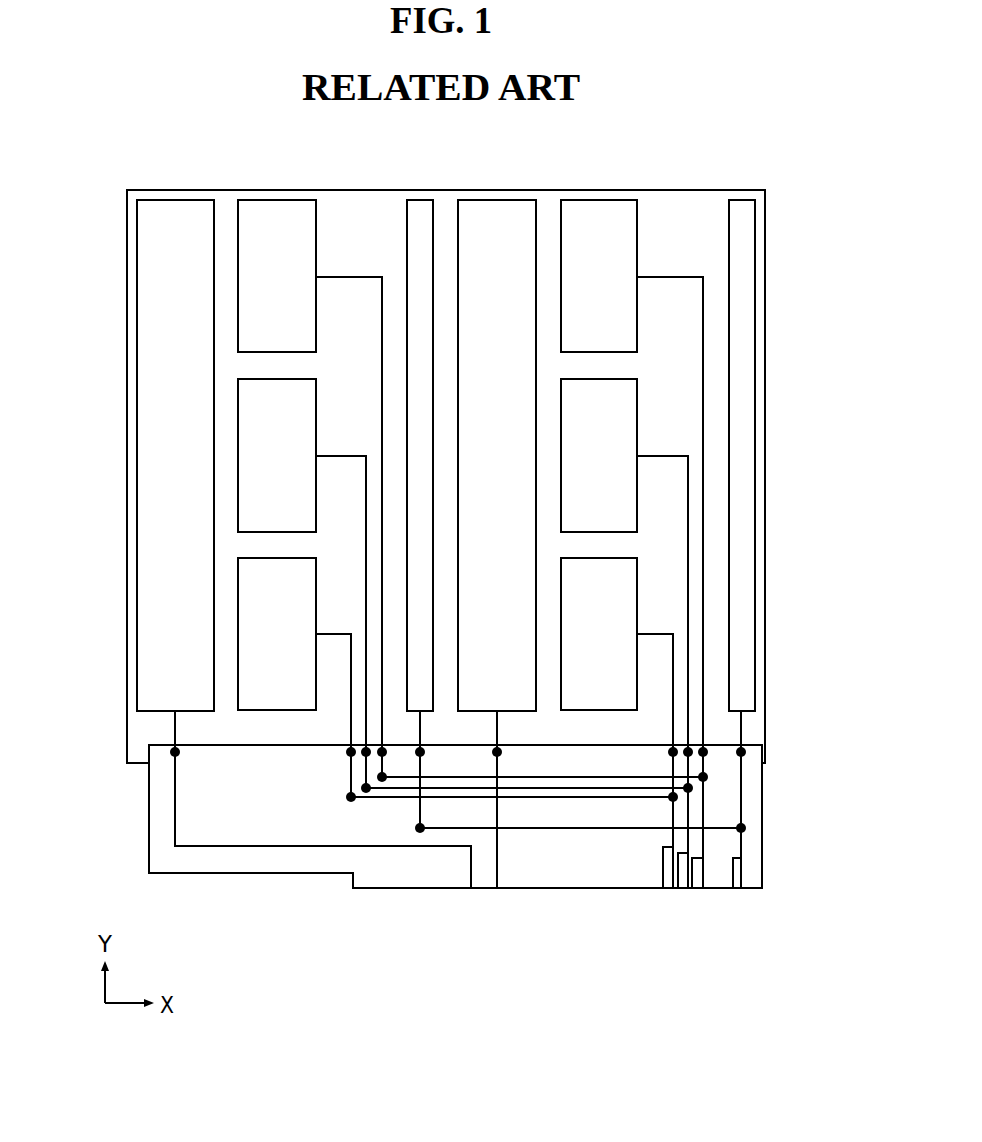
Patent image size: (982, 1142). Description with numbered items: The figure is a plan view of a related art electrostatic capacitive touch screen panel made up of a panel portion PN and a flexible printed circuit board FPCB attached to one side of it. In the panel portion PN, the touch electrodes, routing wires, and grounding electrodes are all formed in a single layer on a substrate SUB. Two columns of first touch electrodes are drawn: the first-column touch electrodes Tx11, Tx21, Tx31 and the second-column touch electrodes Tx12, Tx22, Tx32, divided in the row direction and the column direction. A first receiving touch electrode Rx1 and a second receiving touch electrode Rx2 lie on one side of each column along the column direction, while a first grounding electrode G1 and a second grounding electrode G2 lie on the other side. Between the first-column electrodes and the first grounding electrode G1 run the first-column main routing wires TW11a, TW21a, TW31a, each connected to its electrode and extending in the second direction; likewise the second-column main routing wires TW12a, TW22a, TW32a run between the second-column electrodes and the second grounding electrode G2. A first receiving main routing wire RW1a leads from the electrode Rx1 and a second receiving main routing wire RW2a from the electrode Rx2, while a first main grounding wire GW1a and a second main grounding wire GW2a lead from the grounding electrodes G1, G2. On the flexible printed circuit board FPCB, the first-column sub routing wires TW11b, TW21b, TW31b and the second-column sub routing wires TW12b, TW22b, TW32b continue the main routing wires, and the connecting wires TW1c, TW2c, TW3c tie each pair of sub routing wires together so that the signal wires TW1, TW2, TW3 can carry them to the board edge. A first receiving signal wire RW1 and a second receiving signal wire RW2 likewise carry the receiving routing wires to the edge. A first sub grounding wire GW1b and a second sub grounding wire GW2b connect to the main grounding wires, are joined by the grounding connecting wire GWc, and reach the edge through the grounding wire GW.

The panel portion PN is at (121, 716).
The substrate SUB is at (137, 751).
The flexible printed circuit board FPCB is at (147, 874).
The 2-1 touch electrode Rx1 is at (175, 208).
The 2-2 touch electrode Rx2 is at (503, 212).
The first grounding electrode G1 is at (418, 208).
The second grounding electrode G2 is at (738, 208).
The 1-1 touch electrode Tx11 is at (277, 276).
The 1-1 touch electrode Tx21 is at (277, 455).
The 1-1 touch electrode Tx31 is at (277, 634).
The 1-2 touch electrode Tx12 is at (599, 276).
The 1-2 touch electrode Tx22 is at (599, 455).
The 1-2 touch electrode Tx32 is at (599, 634).
The 1-1 main routing wire TW11a is at (340, 276).
The 1-1 main routing wire TW21a is at (340, 455).
The 1-1 main routing wire TW31a is at (340, 633).
The 1-2 main routing wire TW12a is at (663, 276).
The 1-2 main routing wire TW22a is at (663, 455).
The 1-2 main routing wire TW32a is at (663, 633).
The 1-1 sub routing wire TW11b is at (382, 773).
The 1-1 sub routing wire TW21b is at (367, 772).
The 1-1 sub routing wire TW31b is at (350, 768).
The 1-2 sub routing wire TW12b is at (704, 767).
The 1-2 sub routing wire TW22b is at (687, 769).
The 1-2 sub routing wire TW32b is at (671, 764).
The 1-1 connecting wire TW1c is at (434, 776).
The 1-2 connecting wire TW2c is at (518, 787).
The 1-3 connecting wire TW3c is at (433, 800).
The 1-1 signal wire TW1 is at (694, 878).
The 1-2 signal wire TW2 is at (683, 863).
The 1-3 signal wire TW3 is at (662, 878).
The grounding wire GW is at (734, 870).
The first main grounding wire GW1a is at (422, 721).
The second main grounding wire GW2a is at (743, 722).
The first sub grounding wire GW1b is at (417, 810).
The second sub grounding wire GW2b is at (745, 766).
The grounding connecting wire GWc is at (509, 829).
The 2-1 main routing wire RW1a is at (176, 721).
The 2-2 main routing wire RW2a is at (498, 721).
The 2-1 signal wire RW1 is at (469, 855).
The 2-2 signal wire RW2 is at (499, 855).